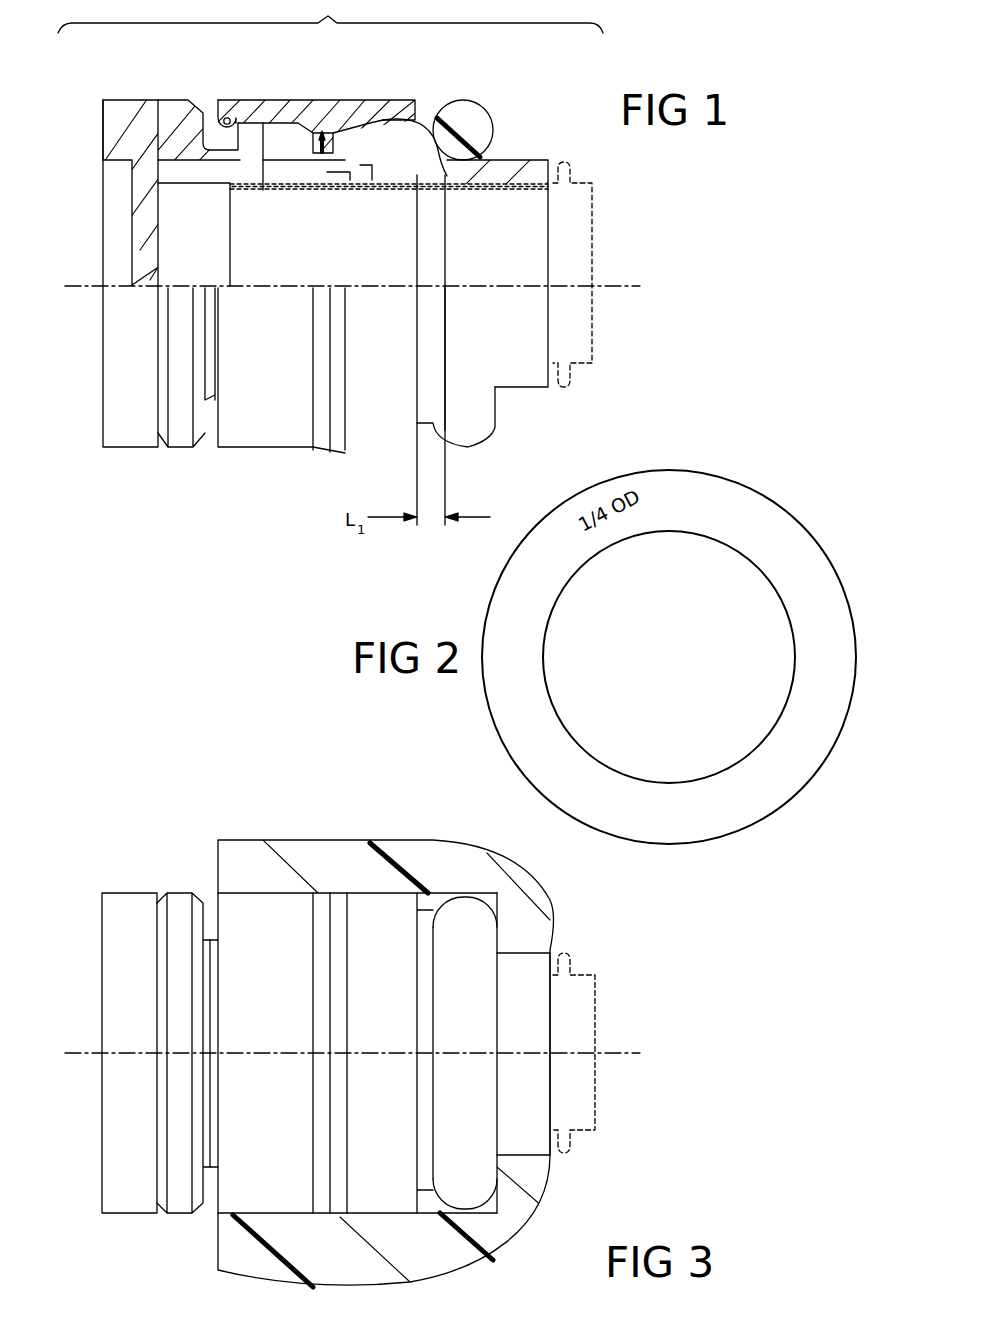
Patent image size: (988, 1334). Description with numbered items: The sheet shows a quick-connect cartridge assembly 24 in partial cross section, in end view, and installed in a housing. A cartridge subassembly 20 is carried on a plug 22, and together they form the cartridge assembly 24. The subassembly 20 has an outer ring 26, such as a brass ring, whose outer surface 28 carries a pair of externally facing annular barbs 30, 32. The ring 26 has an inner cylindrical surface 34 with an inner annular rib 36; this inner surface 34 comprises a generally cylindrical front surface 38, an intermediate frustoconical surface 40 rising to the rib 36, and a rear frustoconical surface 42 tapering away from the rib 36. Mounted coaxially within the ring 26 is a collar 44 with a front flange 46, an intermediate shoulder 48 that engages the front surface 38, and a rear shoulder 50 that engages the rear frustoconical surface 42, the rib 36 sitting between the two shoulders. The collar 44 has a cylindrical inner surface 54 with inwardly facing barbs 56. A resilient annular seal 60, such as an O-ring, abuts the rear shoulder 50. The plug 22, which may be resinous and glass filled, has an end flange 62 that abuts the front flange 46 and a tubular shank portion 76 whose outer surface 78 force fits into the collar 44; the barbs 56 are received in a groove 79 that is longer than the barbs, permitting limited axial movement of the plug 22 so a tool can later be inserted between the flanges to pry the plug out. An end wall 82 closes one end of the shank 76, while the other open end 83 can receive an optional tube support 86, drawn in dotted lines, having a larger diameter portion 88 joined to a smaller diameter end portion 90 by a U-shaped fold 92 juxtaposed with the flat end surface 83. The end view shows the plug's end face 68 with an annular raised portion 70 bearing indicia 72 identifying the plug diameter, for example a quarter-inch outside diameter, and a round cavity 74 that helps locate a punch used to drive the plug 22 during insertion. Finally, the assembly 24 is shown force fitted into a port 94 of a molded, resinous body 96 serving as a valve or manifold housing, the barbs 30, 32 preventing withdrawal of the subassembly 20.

In FIG. 1, the cartridge subassembly 20 is at (400, 105).
In FIG. 3, the cartridge subassembly 20 is at (420, 893).
In FIG. 1, the plug 22 is at (122, 98).
In FIG. 3, the plug 22 is at (122, 892).
In FIG. 1, the cartridge assembly 24 is at (330, 16).
In FIG. 3, the cartridge assembly 24 is at (140, 820).
In FIG. 1, the outer ring 26 is at (298, 100).
In FIG. 1, the outer surface 28 is at (245, 100).
In FIG. 1, the annular barb 30 is at (318, 100).
In FIG. 3, the annular barb 30 is at (318, 893).
In FIG. 1, the annular barb 32 is at (330, 100).
In FIG. 3, the annular barb 32 is at (333, 893).
In FIG. 1, the inner cylindrical surface 34 is at (228, 118).
In FIG. 1, the inner annular rib 36 is at (320, 160).
In FIG. 1, the front surface 38 is at (265, 130).
In FIG. 1, the intermediate frustoconical surface 40 is at (287, 130).
In FIG. 1, the rear frustoconical surface 42 is at (332, 133).
In FIG. 1, the collar 44 is at (180, 98).
In FIG. 3, the collar 44 is at (200, 890).
In FIG. 1, the front flange 46 is at (182, 132).
In FIG. 1, the intermediate shoulder 48 is at (275, 125).
In FIG. 1, the rear shoulder 50 is at (425, 125).
In FIG. 1, the cylindrical inner surface 54 is at (220, 162).
In FIG. 1, the barbs 56 is at (412, 165).
In FIG. 1, the annular seal 60 is at (476, 112).
In FIG. 3, the annular seal 60 is at (470, 923).
In FIG. 1, the end flange 62 is at (118, 398).
In FIG. 2, the end flange 62 is at (752, 520).
In FIG. 3, the end flange 62 is at (120, 1145).
In FIG. 2, the end face 68 is at (683, 670).
In FIG. 1, the raised portion 70 is at (103, 125).
In FIG. 2, the indicia 72 is at (612, 503).
In FIG. 1, the cavity 74 is at (132, 250).
In FIG. 1, the tubular shank portion 76 is at (508, 372).
In FIG. 1, the outer surface 78 is at (537, 160).
In FIG. 1, the groove 79 is at (490, 132).
In FIG. 1, the end wall 82 is at (150, 230).
In FIG. 1, the open end 83 is at (550, 262).
In FIG. 1, the tube support 86 is at (578, 342).
In FIG. 3, the tube support 86 is at (615, 1047).
In FIG. 1, the larger diameter portion 88 is at (585, 180).
In FIG. 1, the smaller diameter end portion 90 is at (520, 190).
In FIG. 1, the U-shaped fold 92 is at (565, 165).
In FIG. 3, the port 94 is at (420, 898).
In FIG. 3, the molded body 96 is at (532, 888).